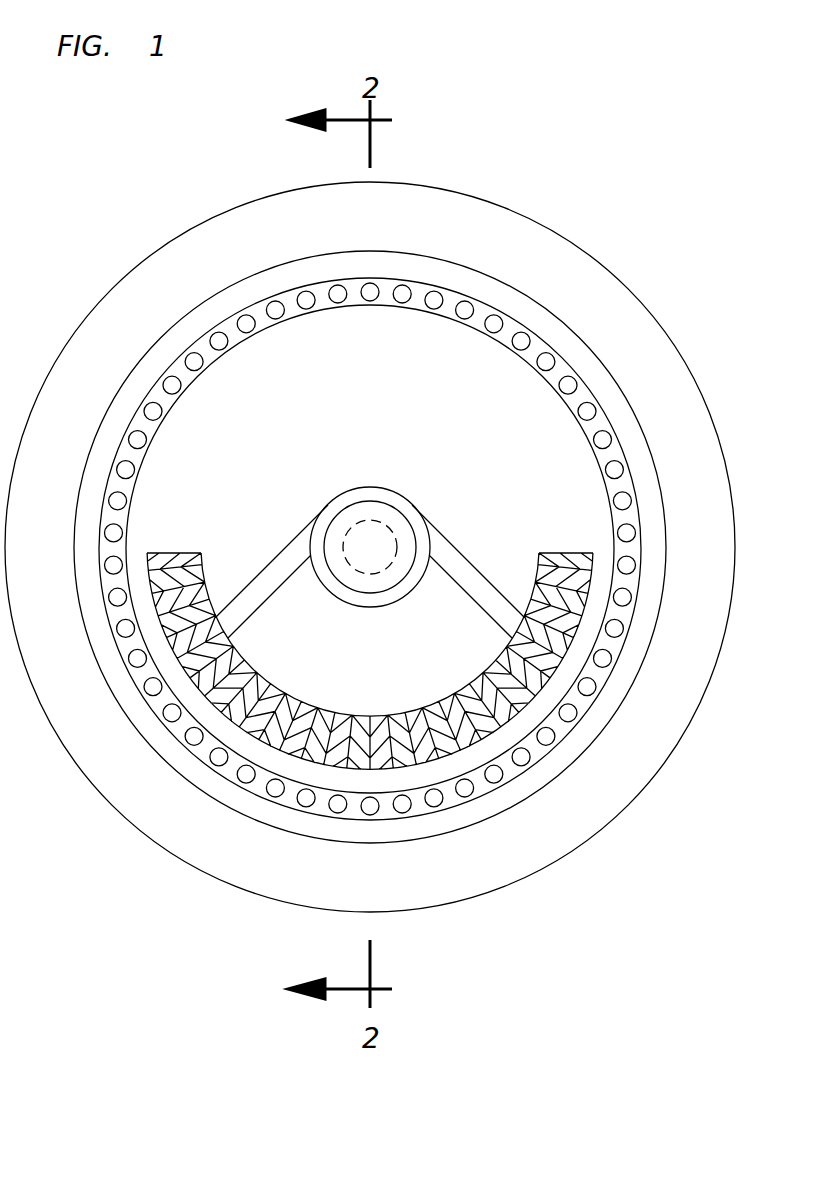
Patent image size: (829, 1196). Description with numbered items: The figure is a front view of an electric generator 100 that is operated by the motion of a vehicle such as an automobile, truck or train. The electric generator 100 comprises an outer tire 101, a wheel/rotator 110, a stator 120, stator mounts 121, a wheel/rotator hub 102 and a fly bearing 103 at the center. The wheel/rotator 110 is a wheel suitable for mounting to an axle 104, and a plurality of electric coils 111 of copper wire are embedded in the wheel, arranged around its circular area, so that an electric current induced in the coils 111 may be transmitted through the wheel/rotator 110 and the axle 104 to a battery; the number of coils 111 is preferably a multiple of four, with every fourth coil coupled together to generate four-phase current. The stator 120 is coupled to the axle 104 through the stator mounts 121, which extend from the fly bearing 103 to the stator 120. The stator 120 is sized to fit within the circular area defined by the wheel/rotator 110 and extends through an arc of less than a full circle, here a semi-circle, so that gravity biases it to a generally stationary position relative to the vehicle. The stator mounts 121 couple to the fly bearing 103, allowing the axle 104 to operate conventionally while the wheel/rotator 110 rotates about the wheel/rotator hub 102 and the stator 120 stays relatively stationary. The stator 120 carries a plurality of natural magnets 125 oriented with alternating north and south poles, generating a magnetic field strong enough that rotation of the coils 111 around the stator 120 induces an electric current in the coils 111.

The electric generator 100 is at (190, 178).
The tire 101 is at (177, 242).
The wheel/rotator 110 is at (233, 323).
The electric coils 111 is at (170, 383).
The wheel/rotator hub 102 is at (400, 497).
The fly bearing 103 is at (362, 510).
The axle 104 is at (347, 537).
The stator 120 is at (467, 540).
The stator mount 121 is at (278, 577).
The natural magnets 125 is at (460, 690).